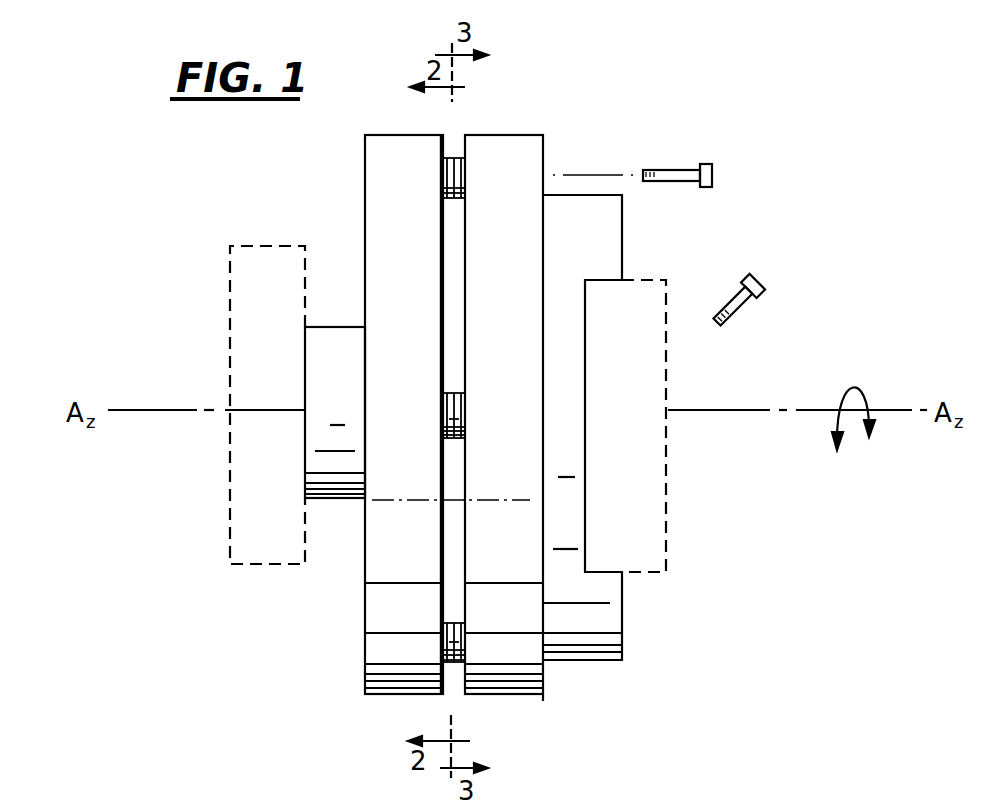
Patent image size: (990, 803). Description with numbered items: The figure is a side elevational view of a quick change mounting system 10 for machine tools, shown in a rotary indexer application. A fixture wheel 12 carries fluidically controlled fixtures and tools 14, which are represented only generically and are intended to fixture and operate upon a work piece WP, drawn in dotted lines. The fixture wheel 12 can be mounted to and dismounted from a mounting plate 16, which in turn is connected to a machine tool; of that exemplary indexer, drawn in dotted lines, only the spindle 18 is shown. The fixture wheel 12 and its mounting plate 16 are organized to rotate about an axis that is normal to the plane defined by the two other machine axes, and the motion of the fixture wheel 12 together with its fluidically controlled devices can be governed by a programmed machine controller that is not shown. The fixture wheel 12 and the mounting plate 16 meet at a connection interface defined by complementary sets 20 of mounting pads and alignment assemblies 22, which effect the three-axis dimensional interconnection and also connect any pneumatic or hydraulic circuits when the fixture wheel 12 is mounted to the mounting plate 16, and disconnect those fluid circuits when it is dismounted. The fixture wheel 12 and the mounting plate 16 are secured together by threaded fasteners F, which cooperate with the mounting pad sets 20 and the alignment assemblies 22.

The quick change mounting system 10 is at (745, 105).
The fixture wheel 12 is at (562, 701).
The fixtures and tools 14 is at (622, 625).
The mounting plate 16 is at (345, 694).
The spindle 18 is at (328, 501).
The sets of mounting pads 20 is at (440, 608).
The alignment assemblies 22 is at (455, 411).
The work piece WP is at (668, 490).
The threaded fasteners F is at (668, 182).